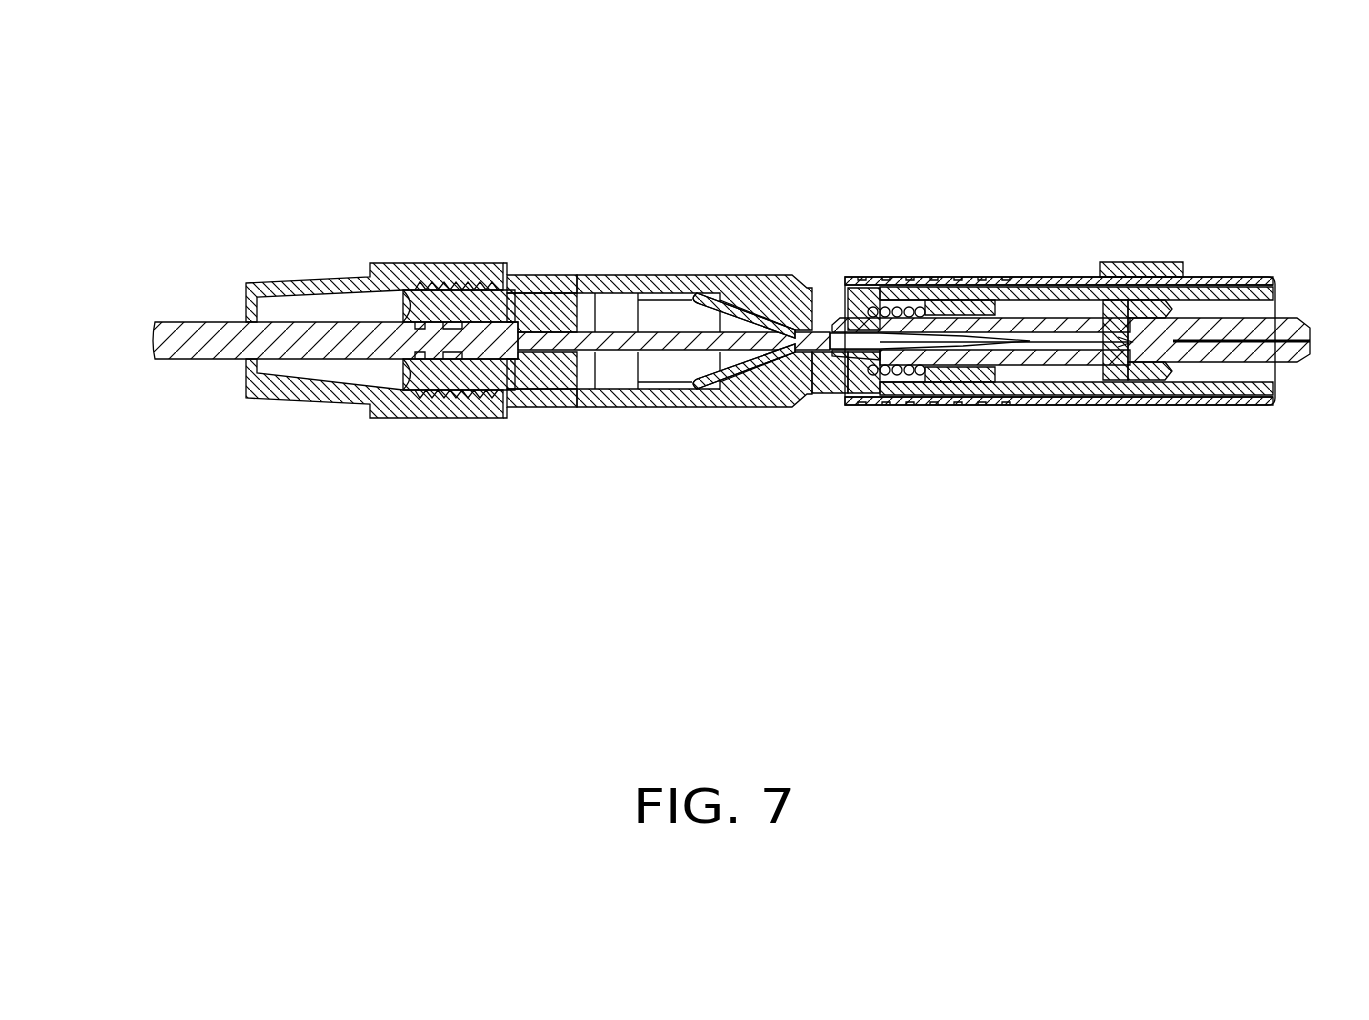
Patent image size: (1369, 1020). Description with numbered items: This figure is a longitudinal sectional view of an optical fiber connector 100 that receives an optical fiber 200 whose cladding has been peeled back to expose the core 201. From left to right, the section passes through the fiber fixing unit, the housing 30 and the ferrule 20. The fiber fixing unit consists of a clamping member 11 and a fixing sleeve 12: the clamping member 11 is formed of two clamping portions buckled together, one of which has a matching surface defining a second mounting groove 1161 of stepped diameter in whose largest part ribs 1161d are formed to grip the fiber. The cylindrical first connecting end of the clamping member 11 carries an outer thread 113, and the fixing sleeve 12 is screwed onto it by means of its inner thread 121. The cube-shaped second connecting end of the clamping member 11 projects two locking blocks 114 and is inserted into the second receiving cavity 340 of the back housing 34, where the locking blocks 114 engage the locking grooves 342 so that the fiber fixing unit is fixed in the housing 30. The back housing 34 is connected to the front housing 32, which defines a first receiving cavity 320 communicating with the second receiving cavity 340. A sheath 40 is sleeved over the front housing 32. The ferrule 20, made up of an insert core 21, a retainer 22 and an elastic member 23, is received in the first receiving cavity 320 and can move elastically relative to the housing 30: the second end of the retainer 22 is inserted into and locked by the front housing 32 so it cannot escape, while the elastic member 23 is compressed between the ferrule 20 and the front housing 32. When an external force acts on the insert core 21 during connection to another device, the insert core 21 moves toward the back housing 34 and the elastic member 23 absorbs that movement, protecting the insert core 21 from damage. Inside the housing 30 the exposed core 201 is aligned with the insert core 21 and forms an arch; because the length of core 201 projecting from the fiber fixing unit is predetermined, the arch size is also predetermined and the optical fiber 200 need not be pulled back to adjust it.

The optical fiber connector 100 is at (621, 84).
The optical fiber 200 is at (193, 335).
The core 201 is at (938, 345).
The clamping member 11 is at (533, 340).
The locking blocks 114 is at (547, 288).
The second mounting groove 1161 is at (421, 287).
The ribs 1161d is at (394, 272).
The fixing sleeve 12 is at (377, 383).
The inner thread 121 is at (410, 412).
The outer thread 113 is at (463, 412).
The housing 30 is at (880, 175).
The back housing 34 is at (700, 340).
The second receiving cavity 340 is at (672, 372).
The locking grooves 342 is at (555, 291).
The front housing 32 is at (858, 286).
The first receiving cavity 320 is at (1192, 377).
The sheath 40 is at (1260, 406).
The ferrule 20 is at (1268, 171).
The elastic member 23 is at (874, 293).
The retainer 22 is at (1112, 330).
The insert core 21 is at (1270, 326).